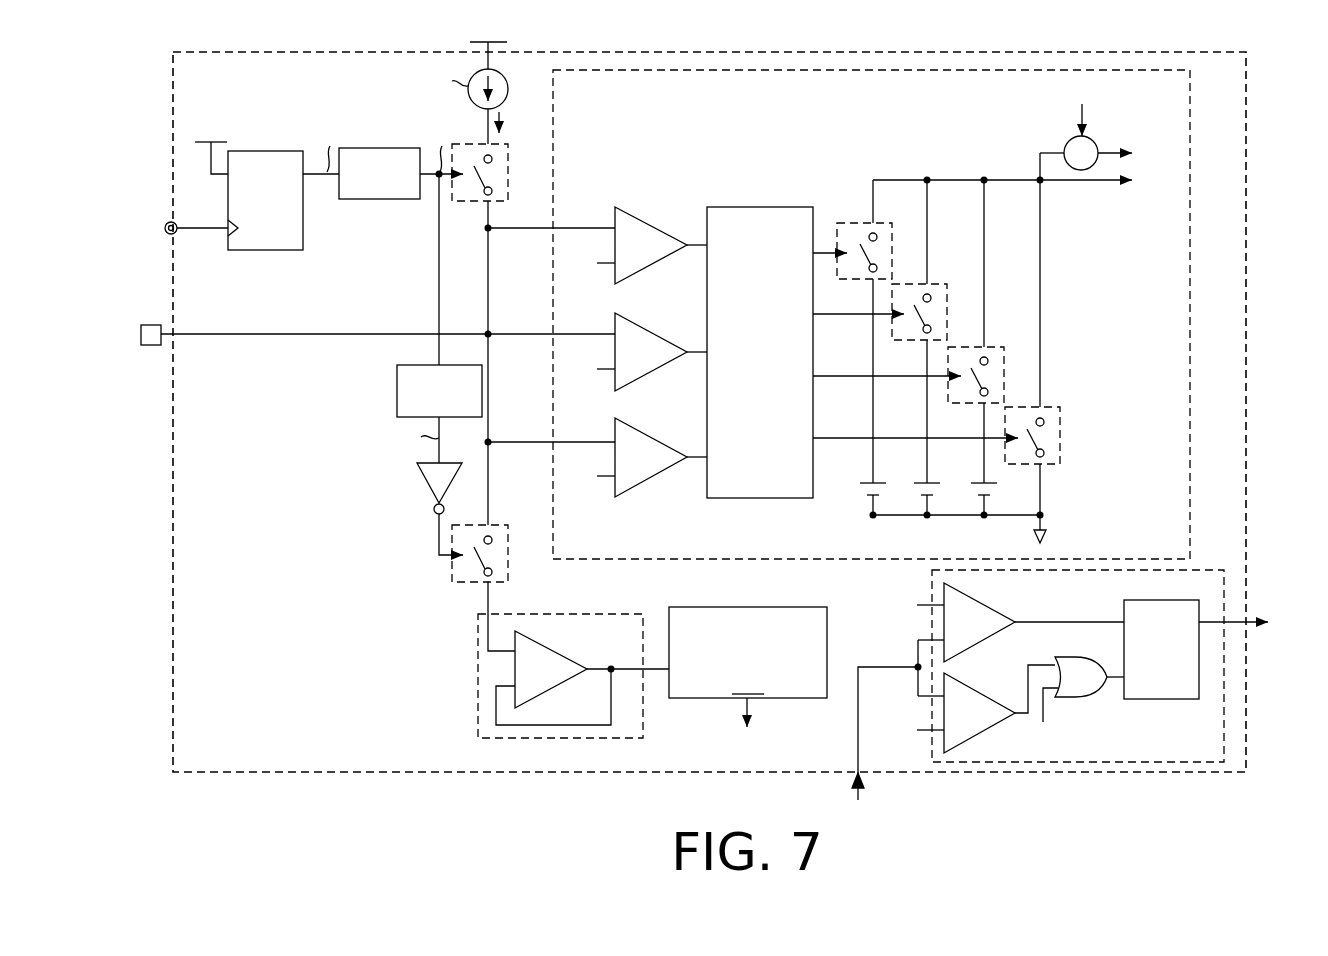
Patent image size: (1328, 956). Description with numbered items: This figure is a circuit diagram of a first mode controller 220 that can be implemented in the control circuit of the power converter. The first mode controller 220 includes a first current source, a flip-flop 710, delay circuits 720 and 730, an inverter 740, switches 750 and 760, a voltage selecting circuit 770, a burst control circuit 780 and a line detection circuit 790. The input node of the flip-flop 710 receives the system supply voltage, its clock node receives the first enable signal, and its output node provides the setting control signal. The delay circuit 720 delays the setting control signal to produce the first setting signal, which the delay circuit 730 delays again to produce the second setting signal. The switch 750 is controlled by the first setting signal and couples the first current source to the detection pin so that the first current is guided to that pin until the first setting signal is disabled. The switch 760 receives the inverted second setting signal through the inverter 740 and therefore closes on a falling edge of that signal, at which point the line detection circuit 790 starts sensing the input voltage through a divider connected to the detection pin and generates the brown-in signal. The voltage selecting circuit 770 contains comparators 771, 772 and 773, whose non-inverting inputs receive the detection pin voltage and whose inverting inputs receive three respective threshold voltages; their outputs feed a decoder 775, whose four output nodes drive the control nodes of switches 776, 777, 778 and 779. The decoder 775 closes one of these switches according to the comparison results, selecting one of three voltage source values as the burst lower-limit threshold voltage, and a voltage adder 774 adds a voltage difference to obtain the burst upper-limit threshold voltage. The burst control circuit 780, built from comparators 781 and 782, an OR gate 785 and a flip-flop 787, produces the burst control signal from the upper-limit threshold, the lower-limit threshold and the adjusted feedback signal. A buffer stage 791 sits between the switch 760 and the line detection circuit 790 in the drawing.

The first mode controller 220 is at (242, 654).
The flip-flop 710 is at (265, 151).
The delay circuit 720 is at (377, 148).
The delay circuit 730 is at (397, 391).
The inverter 740 is at (427, 481).
The switch 750 is at (510, 170).
The switch 760 is at (497, 523).
The voltage selecting circuit 770 is at (1190, 232).
The comparator 771 is at (650, 222).
The comparator 772 is at (650, 327).
The comparator 773 is at (650, 433).
The voltage adder 774 is at (1097, 141).
The decoder 775 is at (757, 207).
The switch 776 is at (888, 223).
The switch 777 is at (944, 284).
The switch 778 is at (1002, 347).
The switch 779 is at (1058, 407).
The burst control circuit 780 is at (1207, 570).
The comparator 781 is at (986, 607).
The comparator 782 is at (986, 698).
The OR gate 785 is at (1077, 703).
The flip-flop 787 is at (1160, 699).
The line detection circuit 790 is at (763, 607).
The comparator 791 is at (583, 613).